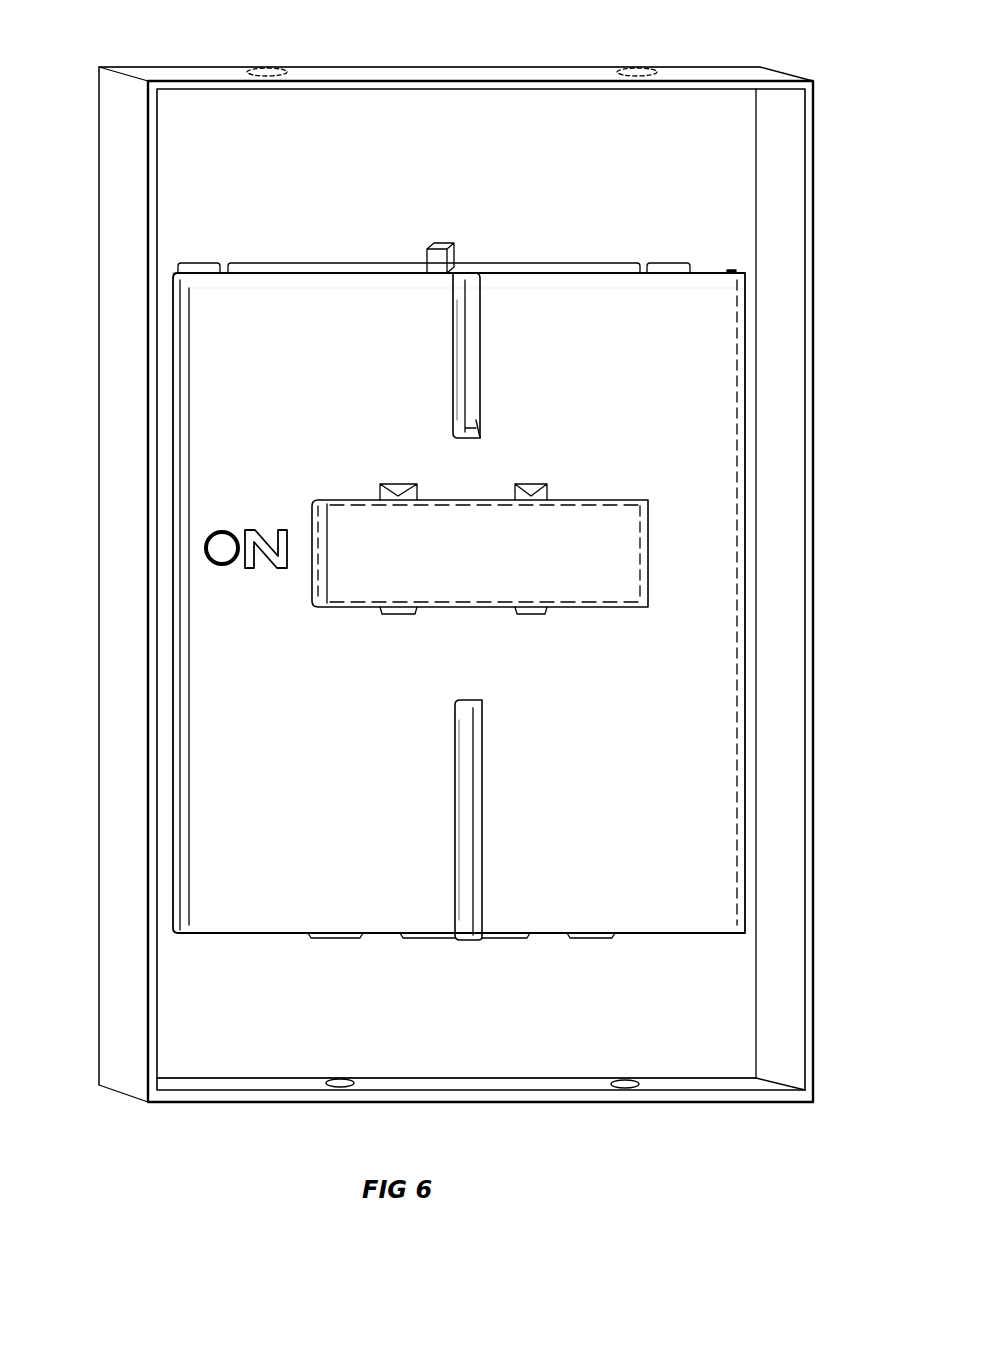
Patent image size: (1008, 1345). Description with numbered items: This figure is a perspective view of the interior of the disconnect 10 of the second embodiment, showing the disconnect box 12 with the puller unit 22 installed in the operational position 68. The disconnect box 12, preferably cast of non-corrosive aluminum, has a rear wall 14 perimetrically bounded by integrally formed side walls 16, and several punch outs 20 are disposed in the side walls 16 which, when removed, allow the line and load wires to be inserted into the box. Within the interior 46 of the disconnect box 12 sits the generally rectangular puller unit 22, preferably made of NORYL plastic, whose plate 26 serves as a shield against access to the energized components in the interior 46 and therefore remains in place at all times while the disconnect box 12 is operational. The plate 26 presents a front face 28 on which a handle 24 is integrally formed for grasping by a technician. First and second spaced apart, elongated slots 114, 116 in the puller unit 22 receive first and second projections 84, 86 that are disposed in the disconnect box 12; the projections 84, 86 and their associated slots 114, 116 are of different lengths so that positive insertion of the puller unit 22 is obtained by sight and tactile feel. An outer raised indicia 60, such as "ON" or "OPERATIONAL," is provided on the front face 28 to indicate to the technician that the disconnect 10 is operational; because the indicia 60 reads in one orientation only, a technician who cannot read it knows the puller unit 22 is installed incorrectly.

The disconnect 10 is at (136, 36).
The disconnect box 12 is at (840, 232).
The rear wall 14 is at (495, 1018).
The side walls 16 is at (457, 75).
The punch outs 20 is at (267, 70).
The puller unit 22 is at (595, 234).
The handle 24 is at (503, 576).
The plate 26 is at (268, 285).
The front face 28 is at (628, 396).
The interior 46 is at (286, 992).
The outer raised indicia 60 is at (237, 537).
The operational position 68 is at (419, 232).
The first projection 84 is at (474, 302).
The second projection 86 is at (482, 736).
The first elongated slot 114 is at (453, 376).
The second elongated slot 116 is at (455, 801).